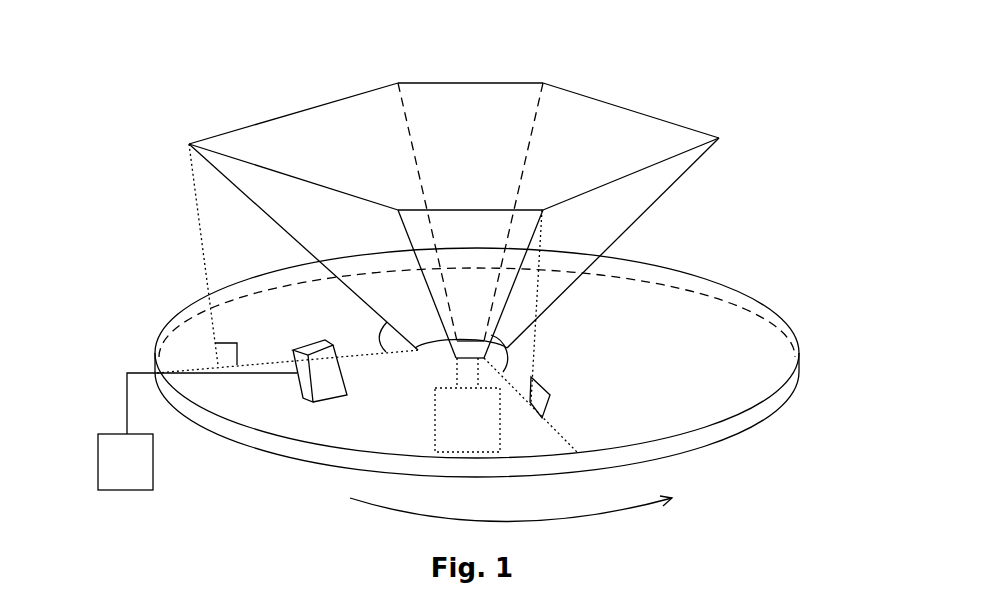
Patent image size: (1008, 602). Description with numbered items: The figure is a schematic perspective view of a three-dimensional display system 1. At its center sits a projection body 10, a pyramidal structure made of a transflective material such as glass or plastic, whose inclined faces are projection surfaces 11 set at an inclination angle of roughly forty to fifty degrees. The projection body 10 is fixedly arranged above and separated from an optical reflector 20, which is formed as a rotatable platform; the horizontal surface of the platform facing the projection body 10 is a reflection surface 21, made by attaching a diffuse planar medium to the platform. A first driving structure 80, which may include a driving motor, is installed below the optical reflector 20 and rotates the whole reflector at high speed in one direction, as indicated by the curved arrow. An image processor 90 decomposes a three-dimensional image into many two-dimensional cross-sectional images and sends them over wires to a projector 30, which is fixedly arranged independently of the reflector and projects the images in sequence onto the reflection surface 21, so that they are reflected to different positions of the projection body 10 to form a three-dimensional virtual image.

The three-dimensional display system 1 is at (180, 93).
The projection body 10 is at (613, 107).
The projection surface 11 is at (625, 193).
The optical reflector 20 is at (799, 372).
The reflection surface 21 is at (702, 328).
The projector 30 is at (303, 382).
The first driving structure 80 is at (460, 429).
The image processor 90 is at (115, 467).